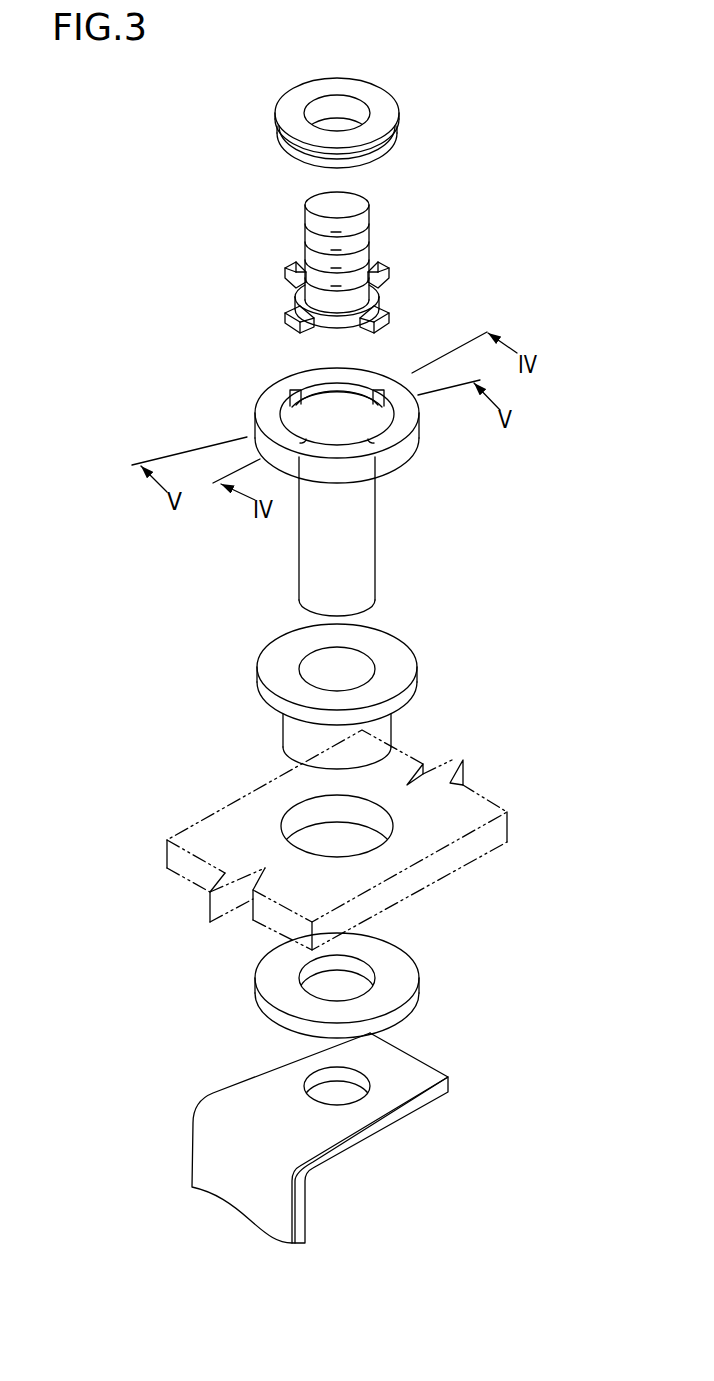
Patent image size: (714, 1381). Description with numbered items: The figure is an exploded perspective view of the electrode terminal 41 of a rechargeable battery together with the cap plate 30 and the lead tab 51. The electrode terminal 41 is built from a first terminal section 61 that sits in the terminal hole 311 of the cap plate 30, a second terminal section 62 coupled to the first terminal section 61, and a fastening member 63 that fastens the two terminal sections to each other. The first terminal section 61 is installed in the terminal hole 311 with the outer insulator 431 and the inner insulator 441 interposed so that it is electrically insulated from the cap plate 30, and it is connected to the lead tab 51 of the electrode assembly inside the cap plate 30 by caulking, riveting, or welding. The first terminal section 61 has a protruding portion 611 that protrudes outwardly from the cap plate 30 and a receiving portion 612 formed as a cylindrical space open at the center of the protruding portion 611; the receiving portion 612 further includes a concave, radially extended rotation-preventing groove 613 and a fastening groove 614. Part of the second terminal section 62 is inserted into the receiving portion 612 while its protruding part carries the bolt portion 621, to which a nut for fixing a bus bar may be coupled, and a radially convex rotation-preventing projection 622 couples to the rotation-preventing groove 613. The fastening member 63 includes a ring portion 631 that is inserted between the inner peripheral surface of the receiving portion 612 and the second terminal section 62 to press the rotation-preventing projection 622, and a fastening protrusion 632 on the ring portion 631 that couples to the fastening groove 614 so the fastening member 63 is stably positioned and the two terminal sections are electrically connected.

The electrode terminal 41 is at (610, 177).
The fastening member 63 is at (350, 120).
The ring portion 631 is at (292, 102).
The fastening protrusion 632 is at (278, 138).
The second terminal section 62 is at (362, 262).
The bolt portion 621 is at (317, 246).
The rotation-preventing projection 622 is at (380, 270).
The first terminal section 61 is at (338, 463).
The protruding portion 611 is at (395, 462).
The receiving portion 612 is at (330, 423).
The rotation-preventing groove 613 is at (372, 377).
The fastening groove 614 is at (293, 408).
The outer insulator 431 is at (387, 737).
The cap plate 30 is at (381, 840).
The terminal hole 311 is at (307, 813).
The inner insulator 441 is at (403, 990).
The lead tab 51 is at (423, 1080).